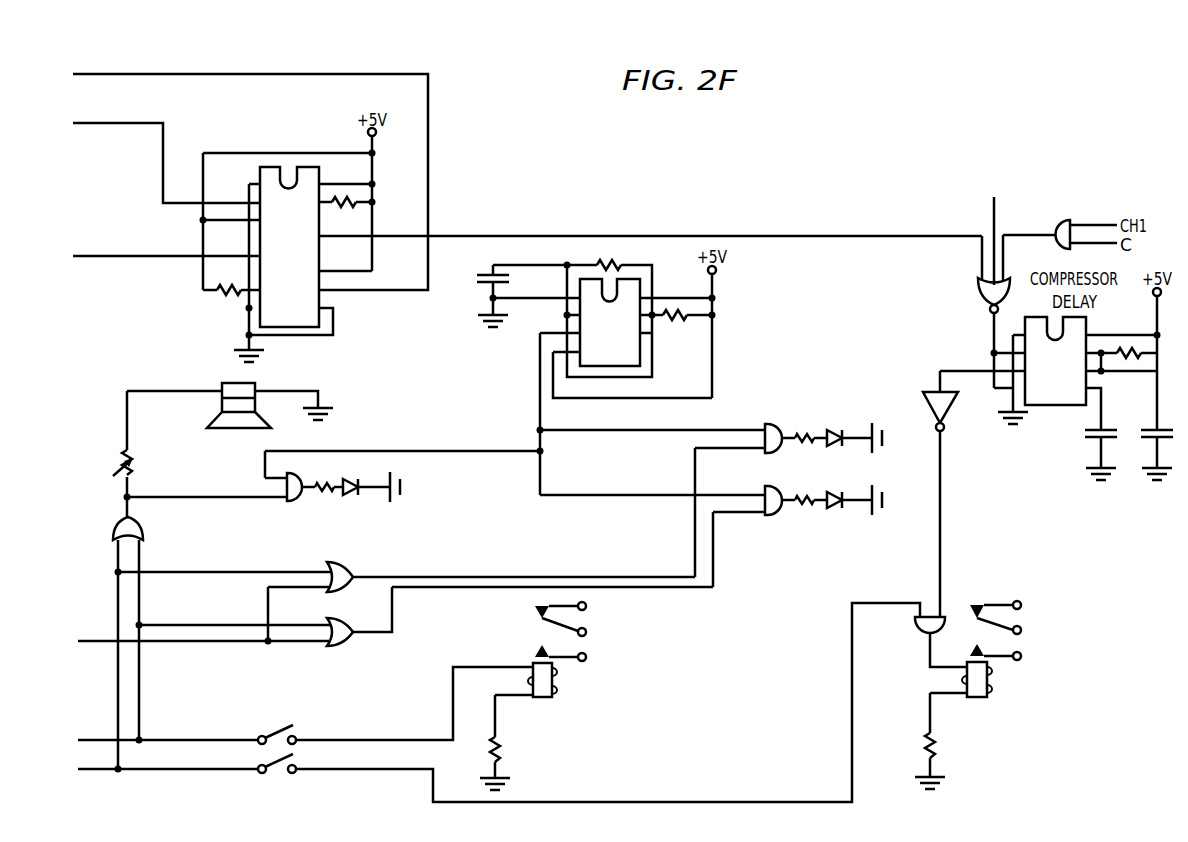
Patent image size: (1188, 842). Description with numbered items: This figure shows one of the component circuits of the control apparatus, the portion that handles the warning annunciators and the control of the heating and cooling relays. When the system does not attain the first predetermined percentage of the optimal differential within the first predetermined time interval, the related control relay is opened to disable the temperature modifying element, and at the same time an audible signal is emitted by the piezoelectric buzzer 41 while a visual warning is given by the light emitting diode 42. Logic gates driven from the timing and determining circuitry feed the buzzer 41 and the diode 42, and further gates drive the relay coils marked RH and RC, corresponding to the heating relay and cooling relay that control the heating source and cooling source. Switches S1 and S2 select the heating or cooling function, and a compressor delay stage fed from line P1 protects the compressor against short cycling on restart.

The piezoelectric buzzer 41 is at (222, 383).
The light emitting diode 42 is at (346, 500).
The switch S1 is at (277, 727).
The switch S2 is at (277, 775).
The heating relay RH is at (569, 649).
The cooling relay RC is at (1003, 649).
The input line P1 is at (995, 230).